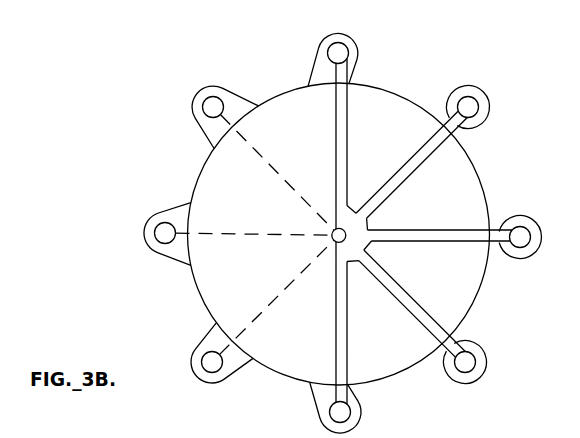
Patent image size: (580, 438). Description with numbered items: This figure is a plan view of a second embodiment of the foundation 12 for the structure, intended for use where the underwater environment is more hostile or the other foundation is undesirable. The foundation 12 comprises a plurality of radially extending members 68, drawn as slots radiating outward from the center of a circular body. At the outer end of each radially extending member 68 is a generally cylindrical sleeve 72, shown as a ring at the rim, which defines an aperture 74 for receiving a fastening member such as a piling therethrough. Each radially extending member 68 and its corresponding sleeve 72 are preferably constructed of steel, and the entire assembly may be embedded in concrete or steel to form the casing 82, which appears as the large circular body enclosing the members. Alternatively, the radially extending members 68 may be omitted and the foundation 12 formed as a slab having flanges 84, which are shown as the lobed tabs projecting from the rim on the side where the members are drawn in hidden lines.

The foundation 12 is at (495, 182).
The casing 82 is at (290, 130).
The radially extending member 68 is at (404, 162).
The generally cylindrical sleeve 72 is at (457, 88).
The aperture 74 is at (470, 104).
The flange 84 is at (180, 213).